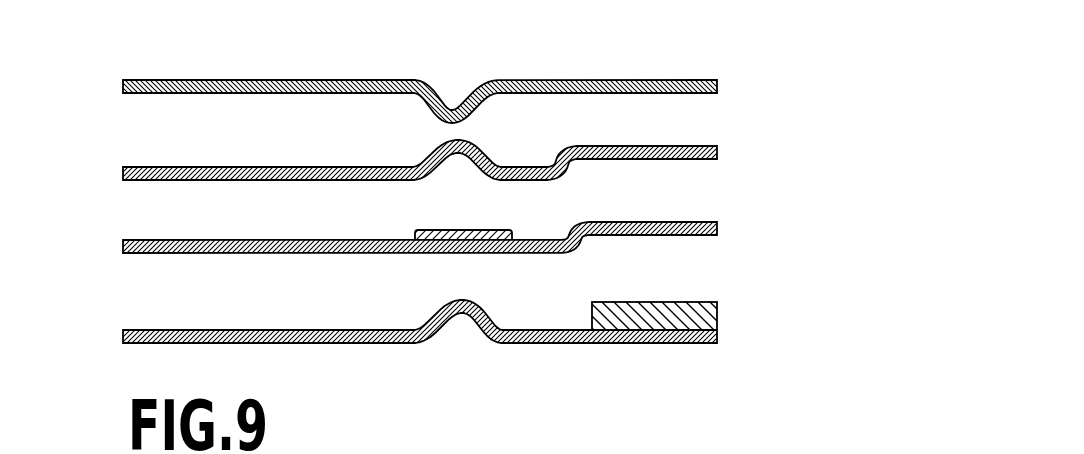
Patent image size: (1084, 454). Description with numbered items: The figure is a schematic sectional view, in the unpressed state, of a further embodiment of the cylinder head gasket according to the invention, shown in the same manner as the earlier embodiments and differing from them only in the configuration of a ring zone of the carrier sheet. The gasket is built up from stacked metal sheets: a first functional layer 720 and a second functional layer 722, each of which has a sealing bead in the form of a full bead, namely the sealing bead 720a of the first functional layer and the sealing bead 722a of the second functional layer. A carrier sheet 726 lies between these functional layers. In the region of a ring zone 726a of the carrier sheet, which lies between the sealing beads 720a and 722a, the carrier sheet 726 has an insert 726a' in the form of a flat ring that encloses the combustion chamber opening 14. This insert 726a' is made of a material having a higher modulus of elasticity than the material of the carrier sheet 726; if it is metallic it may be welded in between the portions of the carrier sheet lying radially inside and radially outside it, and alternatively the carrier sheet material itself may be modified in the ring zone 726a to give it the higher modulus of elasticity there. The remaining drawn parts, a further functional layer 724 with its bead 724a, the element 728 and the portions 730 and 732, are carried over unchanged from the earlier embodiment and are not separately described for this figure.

The combustion chamber opening 14 is at (750, 153).
The first functional layer 720 is at (172, 343).
The sealing bead of the first functional layer 720a is at (496, 307).
The second functional layer 722 is at (172, 180).
The sealing bead of the second functional layer 722a is at (497, 153).
The top plate 724 is at (172, 93).
The depression of top plate 724a is at (433, 111).
The carrier sheet 726 is at (172, 253).
The ring zone of the carrier sheet 726a is at (402, 219).
The insert 726a' is at (335, 280).
The spacer block 728 is at (716, 323).
The offset portion of second plate 730 is at (568, 166).
The offset portion of third plate 732 is at (583, 238).